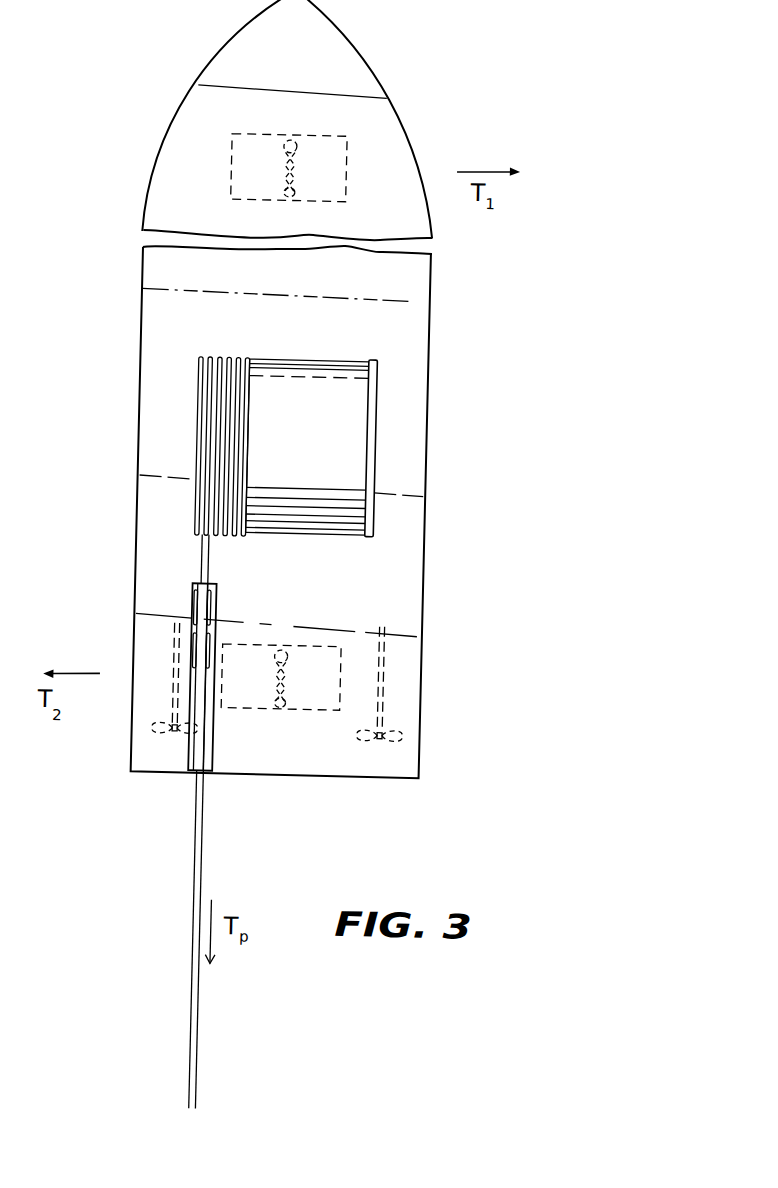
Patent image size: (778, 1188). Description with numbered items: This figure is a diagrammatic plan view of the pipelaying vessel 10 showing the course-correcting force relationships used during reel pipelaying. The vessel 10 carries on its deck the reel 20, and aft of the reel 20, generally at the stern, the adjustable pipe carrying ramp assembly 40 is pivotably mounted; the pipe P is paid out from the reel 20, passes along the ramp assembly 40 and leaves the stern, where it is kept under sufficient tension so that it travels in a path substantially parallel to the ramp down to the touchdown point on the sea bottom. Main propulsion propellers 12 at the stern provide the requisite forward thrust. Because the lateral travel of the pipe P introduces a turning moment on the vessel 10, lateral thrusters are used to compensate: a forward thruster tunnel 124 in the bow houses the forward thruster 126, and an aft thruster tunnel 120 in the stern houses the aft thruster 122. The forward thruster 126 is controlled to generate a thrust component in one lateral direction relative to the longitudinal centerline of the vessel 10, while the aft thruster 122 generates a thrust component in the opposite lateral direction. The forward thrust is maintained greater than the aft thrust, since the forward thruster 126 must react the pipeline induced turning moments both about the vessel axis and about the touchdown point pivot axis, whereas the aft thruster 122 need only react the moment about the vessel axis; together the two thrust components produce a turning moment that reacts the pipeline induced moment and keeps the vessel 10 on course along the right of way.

The vessel 10 is at (417, 327).
The main propulsion propellers 12 is at (393, 661).
The reel 20 is at (364, 425).
The ramp assembly 40 is at (224, 737).
The pipe P is at (209, 562).
The aft thruster tunnel 120 is at (323, 704).
The aft thruster 122 is at (302, 696).
The forward thruster tunnel 124 is at (347, 170).
The forward thruster 126 is at (298, 148).